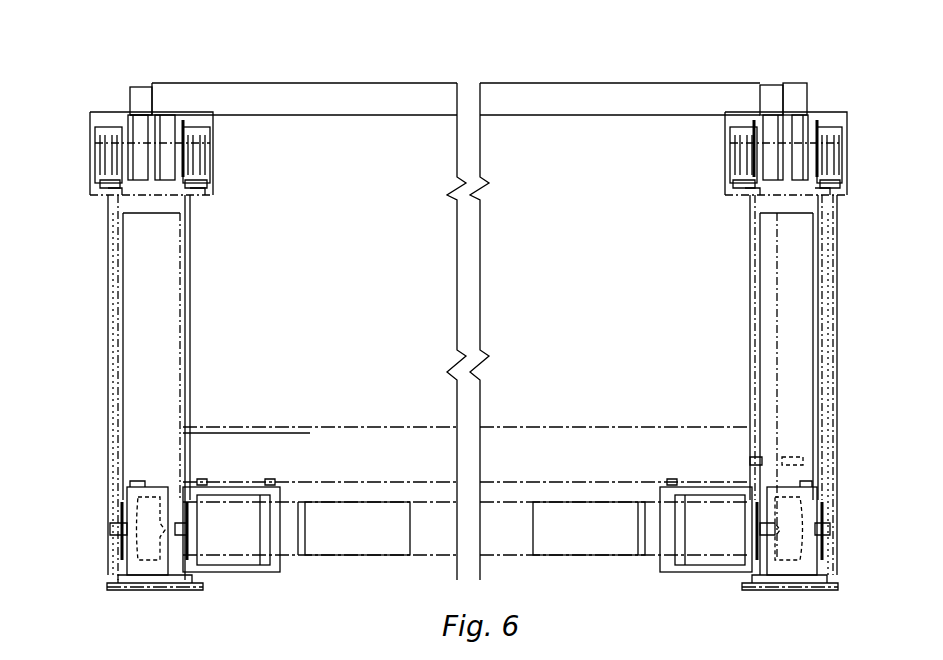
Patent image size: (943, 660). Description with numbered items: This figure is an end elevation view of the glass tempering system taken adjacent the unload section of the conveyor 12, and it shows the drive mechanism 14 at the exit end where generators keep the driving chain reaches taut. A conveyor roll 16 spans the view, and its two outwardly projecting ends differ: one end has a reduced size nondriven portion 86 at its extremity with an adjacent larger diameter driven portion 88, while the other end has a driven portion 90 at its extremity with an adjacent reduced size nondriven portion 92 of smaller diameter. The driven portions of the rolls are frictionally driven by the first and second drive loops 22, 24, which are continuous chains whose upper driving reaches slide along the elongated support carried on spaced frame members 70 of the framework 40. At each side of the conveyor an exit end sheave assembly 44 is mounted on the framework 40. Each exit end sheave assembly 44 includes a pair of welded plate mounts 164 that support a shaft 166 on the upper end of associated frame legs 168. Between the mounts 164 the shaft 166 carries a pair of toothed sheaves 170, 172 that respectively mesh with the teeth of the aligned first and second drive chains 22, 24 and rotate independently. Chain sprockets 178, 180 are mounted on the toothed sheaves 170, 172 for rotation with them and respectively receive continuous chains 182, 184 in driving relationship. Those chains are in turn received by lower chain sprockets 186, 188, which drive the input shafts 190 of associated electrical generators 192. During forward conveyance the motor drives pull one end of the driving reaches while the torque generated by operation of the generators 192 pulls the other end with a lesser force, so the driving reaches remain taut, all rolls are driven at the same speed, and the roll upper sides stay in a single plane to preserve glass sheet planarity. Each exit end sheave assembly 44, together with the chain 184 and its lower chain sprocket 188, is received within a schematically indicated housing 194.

The conveyor 12 is at (210, 43).
The drive mechanism 14 is at (825, 55).
The conveyor roll 16 is at (497, 83).
The first drive loop 22 is at (177, 113).
The second drive loop 24 is at (130, 114).
The framework 40 is at (124, 346).
The exit end sheave assembly 44 is at (186, 194).
The frame member 70 is at (122, 203).
The reduced size nondriven portion 86 is at (140, 86).
The driven portion 88 is at (183, 83).
The driven portion 90 is at (802, 83).
The reduced size nondriven portion 92 is at (772, 84).
The welded plate mount 164 is at (100, 133).
The shaft 166 is at (192, 145).
The frame leg 168 is at (182, 327).
The toothed sheave 170 is at (187, 125).
The toothed sheave 172 is at (128, 118).
The chain sprocket 178 is at (203, 168).
The chain sprocket 180 is at (105, 170).
The continuous chain 182 is at (188, 288).
The continuous chain 184 is at (120, 258).
The chain sprocket 186 is at (183, 503).
The chain sprocket 188 is at (120, 507).
The input shaft 190 is at (118, 537).
The electrical generator 192 is at (216, 548).
The housing 194 is at (853, 373).